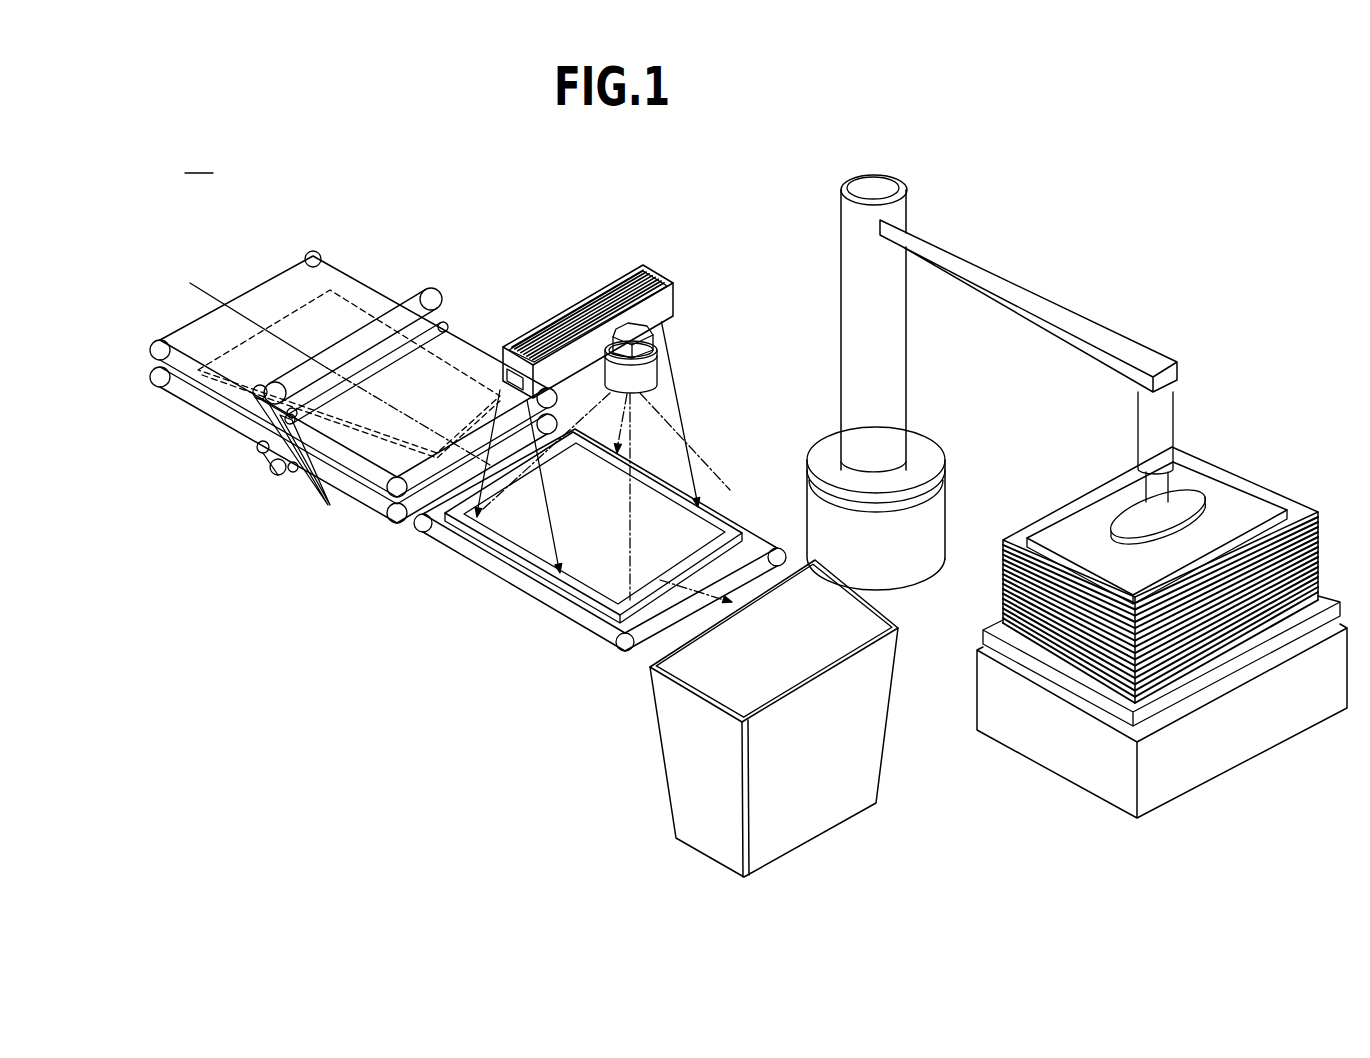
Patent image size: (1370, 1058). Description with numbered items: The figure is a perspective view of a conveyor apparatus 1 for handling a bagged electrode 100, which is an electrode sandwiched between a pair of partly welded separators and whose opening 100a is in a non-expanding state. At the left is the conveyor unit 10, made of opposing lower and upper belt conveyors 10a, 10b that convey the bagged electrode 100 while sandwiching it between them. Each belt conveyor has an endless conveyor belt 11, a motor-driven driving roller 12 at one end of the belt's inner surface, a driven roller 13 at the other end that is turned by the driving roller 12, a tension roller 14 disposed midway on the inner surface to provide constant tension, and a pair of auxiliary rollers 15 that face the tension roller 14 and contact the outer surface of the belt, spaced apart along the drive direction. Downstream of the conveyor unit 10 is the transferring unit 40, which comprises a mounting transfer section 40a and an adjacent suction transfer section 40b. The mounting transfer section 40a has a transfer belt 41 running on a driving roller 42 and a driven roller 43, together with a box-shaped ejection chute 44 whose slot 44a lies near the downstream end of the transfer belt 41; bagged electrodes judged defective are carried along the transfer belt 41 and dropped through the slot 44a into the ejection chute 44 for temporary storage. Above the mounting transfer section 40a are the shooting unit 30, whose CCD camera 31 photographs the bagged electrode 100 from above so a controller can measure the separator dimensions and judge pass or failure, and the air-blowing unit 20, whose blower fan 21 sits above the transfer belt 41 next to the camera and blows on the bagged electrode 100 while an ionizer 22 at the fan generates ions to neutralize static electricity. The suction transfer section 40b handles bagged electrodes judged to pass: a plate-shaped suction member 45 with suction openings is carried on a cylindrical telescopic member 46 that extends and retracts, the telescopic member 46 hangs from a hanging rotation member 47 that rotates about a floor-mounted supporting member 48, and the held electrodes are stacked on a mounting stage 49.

The conveyor apparatus 1 is at (199, 158).
The conveyor unit 10 is at (316, 429).
The lower belt conveyor 10a is at (316, 409).
The upper belt conveyor 10b is at (447, 292).
The conveyor belt 11 is at (240, 402).
The driving roller 12 is at (393, 502).
The driven roller 13 is at (150, 377).
The tension roller 14 is at (275, 462).
The auxiliary rollers 15 is at (329, 500).
The air-blowing unit 20 is at (614, 384).
The blower fan 21 is at (614, 405).
The ionizer 22 is at (517, 368).
The shooting unit 30 is at (618, 440).
The CCD camera 31 is at (652, 375).
The transferring unit 40 is at (863, 526).
The mounting transfer section 40a is at (583, 573).
The suction transfer section 40b is at (1033, 382).
The transfer belt 41 is at (535, 578).
The driving roller 42 is at (620, 648).
The driven roller 43 is at (421, 530).
The ejection chute 44 is at (738, 718).
The slot 44a is at (668, 672).
The suction member 45 is at (1205, 476).
The telescopic member 46 is at (1147, 402).
The hanging rotation member 47 is at (985, 294).
The supporting member 48 is at (938, 525).
The mounting stage 49 is at (1050, 754).
The bagged electrode 100 is at (435, 385).
The opening 100a is at (695, 555).